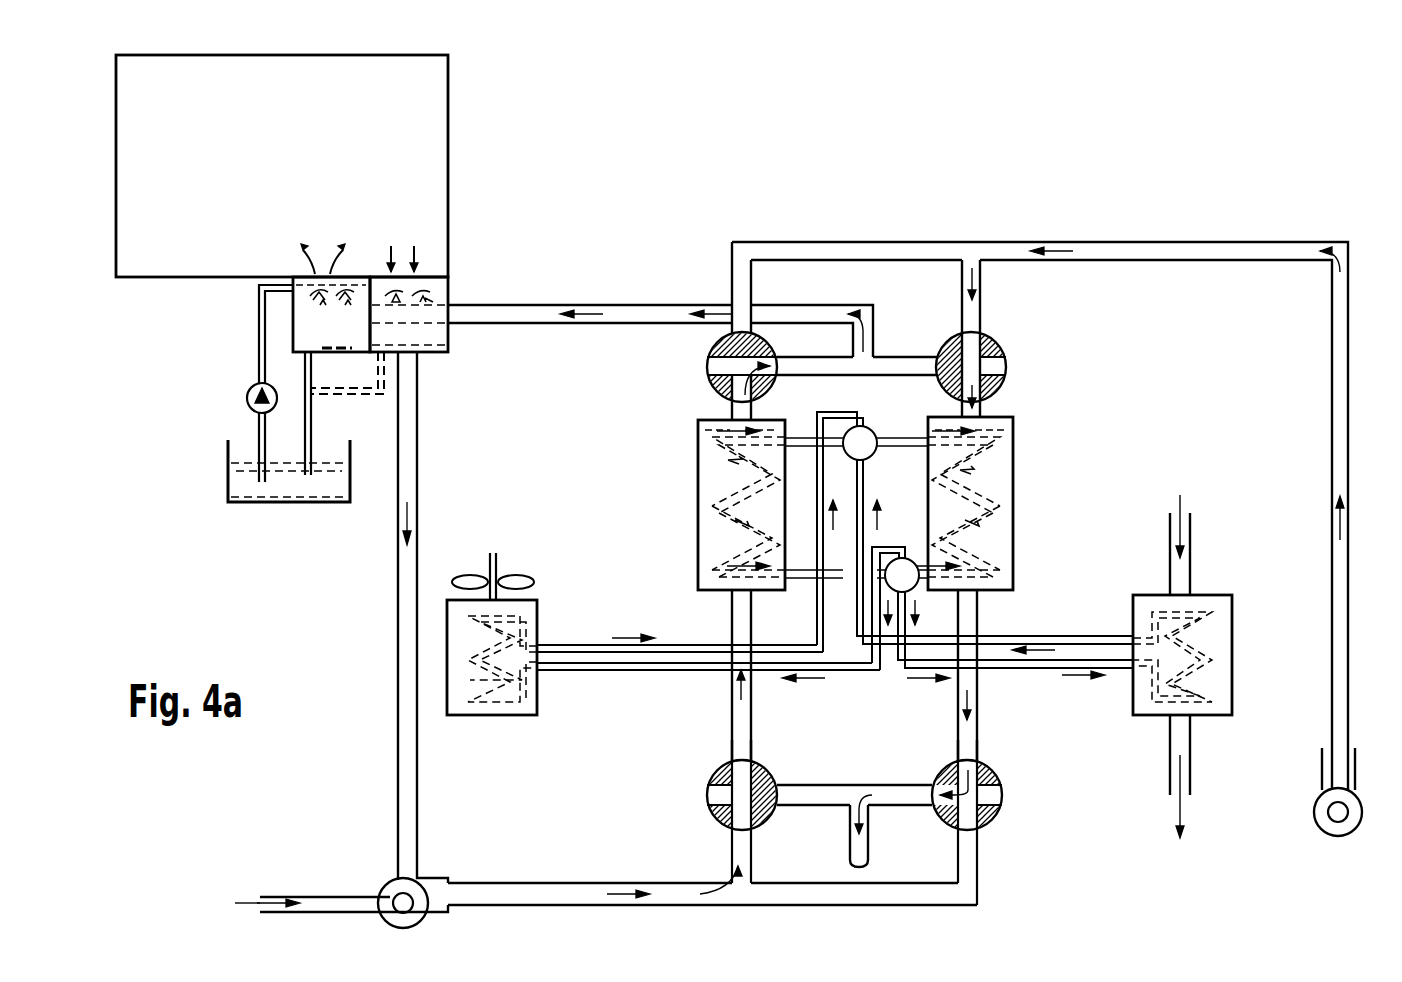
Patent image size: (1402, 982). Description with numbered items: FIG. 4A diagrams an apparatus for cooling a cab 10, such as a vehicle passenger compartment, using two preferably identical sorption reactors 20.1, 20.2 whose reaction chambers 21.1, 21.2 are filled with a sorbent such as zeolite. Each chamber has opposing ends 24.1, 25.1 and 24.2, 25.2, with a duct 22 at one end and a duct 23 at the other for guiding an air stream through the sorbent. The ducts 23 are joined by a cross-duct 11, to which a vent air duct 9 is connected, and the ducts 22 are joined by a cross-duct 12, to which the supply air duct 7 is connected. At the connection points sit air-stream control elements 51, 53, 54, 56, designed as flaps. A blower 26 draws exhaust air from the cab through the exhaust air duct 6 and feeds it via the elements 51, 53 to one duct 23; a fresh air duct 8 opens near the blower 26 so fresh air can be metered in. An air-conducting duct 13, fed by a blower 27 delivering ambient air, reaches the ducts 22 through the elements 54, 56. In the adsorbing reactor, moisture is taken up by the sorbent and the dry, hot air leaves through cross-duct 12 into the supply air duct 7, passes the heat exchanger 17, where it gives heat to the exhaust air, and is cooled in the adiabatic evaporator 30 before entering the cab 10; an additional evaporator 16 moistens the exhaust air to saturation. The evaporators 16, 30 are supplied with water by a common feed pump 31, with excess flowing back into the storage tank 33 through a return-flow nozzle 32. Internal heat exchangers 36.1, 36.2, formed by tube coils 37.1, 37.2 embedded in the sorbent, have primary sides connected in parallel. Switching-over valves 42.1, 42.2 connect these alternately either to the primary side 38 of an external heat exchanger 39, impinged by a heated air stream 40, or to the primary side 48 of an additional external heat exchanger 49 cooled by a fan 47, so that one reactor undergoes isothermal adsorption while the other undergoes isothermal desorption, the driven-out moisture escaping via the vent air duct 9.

The cab 10 is at (243, 140).
The evaporator 30 is at (331, 314).
The additional evaporator 16 is at (432, 284).
The heat exchanger 17 is at (428, 352).
The feed pump 31 is at (247, 395).
The return-flow nozzle 32 is at (311, 412).
The storage tank 33 is at (228, 478).
The exhaust air duct 6 is at (398, 612).
The supply air duct 7 is at (605, 305).
The fresh air duct 8 is at (340, 912).
The blower 26 is at (420, 915).
The cross-duct 12 is at (803, 362).
The air-conducting duct 13 is at (1010, 242).
The air-stream control element 56 is at (707, 367).
The air-stream control element 54 is at (1006, 367).
The duct 22 is at (726, 410).
The sorption reactor 20.1 is at (698, 460).
The end of reaction chamber 24.1 is at (698, 428).
The internal heat exchanger 36.1 is at (705, 486).
The tube coil 37.1 is at (710, 528).
The reaction chamber 21.1 is at (710, 572).
The end of reaction chamber 25.1 is at (720, 592).
The switching-over valve 42.1 is at (884, 418).
The switching-over valve 42.2 is at (905, 556).
The sorption reactor 20.2 is at (1013, 455).
The end of reaction chamber 24.2 is at (1015, 425).
The internal heat exchanger 36.2 is at (1008, 480).
The tube coil 37.2 is at (1005, 520).
The reaction chamber 21.2 is at (1010, 572).
The end of reaction chamber 25.2 is at (1000, 592).
The primary side of external heat exchanger 38 is at (1053, 652).
The external heat exchanger 39 is at (1218, 705).
The heated air stream 40 is at (1190, 508).
The fan 47 is at (505, 575).
The primary side of additional external heat exchanger 48 is at (600, 656).
The additional external heat exchanger 49 is at (455, 715).
The duct 23 is at (732, 755).
The air-stream control element 51 is at (707, 808).
The air-stream control element 53 is at (1002, 800).
The cross-duct 11 is at (812, 805).
The vent air duct 9 is at (868, 845).
The blower 27 is at (1315, 815).